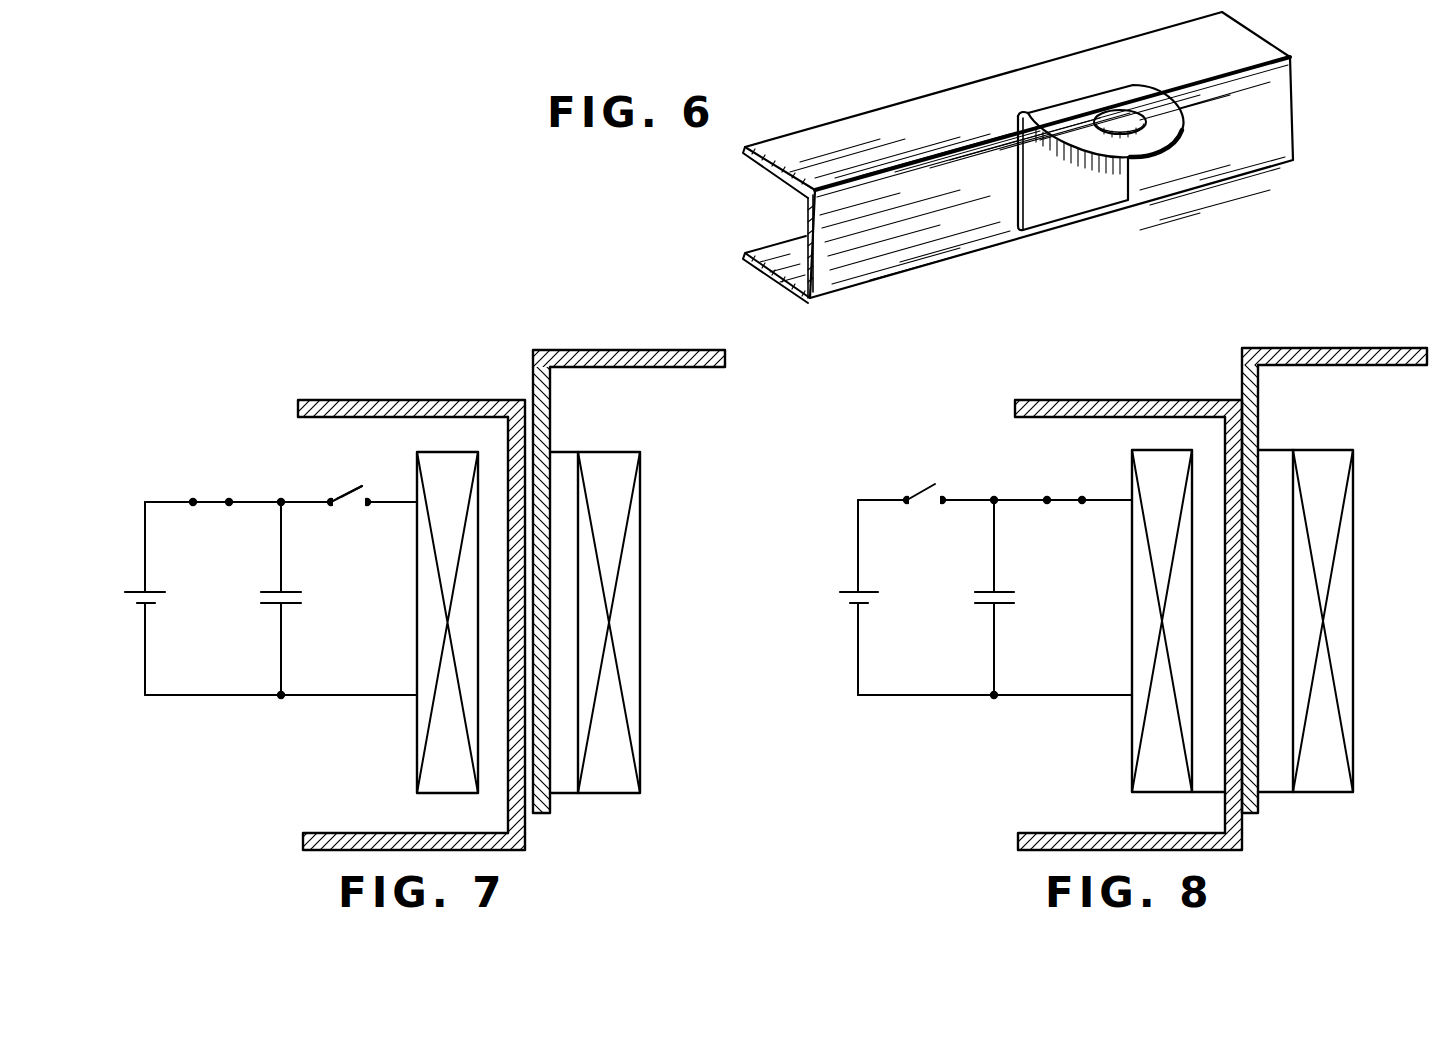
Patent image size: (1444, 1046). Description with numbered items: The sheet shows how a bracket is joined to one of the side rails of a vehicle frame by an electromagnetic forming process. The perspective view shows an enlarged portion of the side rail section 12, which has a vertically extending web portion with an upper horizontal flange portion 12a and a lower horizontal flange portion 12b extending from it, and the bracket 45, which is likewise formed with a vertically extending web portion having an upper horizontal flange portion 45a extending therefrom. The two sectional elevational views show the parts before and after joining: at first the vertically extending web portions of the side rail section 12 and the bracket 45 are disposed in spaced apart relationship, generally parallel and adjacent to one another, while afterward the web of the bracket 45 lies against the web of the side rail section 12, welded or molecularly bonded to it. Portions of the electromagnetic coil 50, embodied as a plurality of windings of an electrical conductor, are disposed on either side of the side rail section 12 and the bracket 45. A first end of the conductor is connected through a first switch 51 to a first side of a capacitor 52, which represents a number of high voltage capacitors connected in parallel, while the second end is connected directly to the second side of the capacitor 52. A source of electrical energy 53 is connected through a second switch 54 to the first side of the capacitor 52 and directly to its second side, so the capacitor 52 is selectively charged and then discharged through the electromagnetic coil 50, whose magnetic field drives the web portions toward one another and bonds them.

In FIG. 6, the side rail section 12 is at (888, 253).
In FIG. 6, the upper horizontal flange portion 12a is at (862, 125).
In FIG. 7, the upper horizontal flange portion 12a is at (355, 400).
In FIG. 8, the upper horizontal flange portion 12a is at (1075, 400).
In FIG. 6, the lower horizontal flange portion 12b is at (773, 253).
In FIG. 7, the lower horizontal flange portion 12b is at (350, 832).
In FIG. 8, the lower horizontal flange portion 12b is at (1070, 830).
In FIG. 6, the bracket 45 is at (1068, 197).
In FIG. 7, the bracket 45 is at (552, 412).
In FIG. 8, the bracket 45 is at (1258, 408).
In FIG. 6, the upper horizontal flange portion 45a is at (1153, 132).
In FIG. 7, the upper horizontal flange portion 45a is at (633, 350).
In FIG. 8, the upper horizontal flange portion 45a is at (1380, 348).
In FIG. 7, the electromagnetic coil 50 is at (625, 502).
In FIG. 8, the electromagnetic coil 50 is at (1345, 537).
In FIG. 7, the first switch 51 is at (340, 496).
In FIG. 8, the first switch 51 is at (1067, 497).
In FIG. 7, the capacitor 52 is at (290, 590).
In FIG. 8, the capacitor 52 is at (990, 590).
In FIG. 7, the source of electrical energy 53 is at (152, 590).
In FIG. 8, the source of electrical energy 53 is at (852, 590).
In FIG. 7, the second switch 54 is at (210, 500).
In FIG. 8, the second switch 54 is at (922, 490).